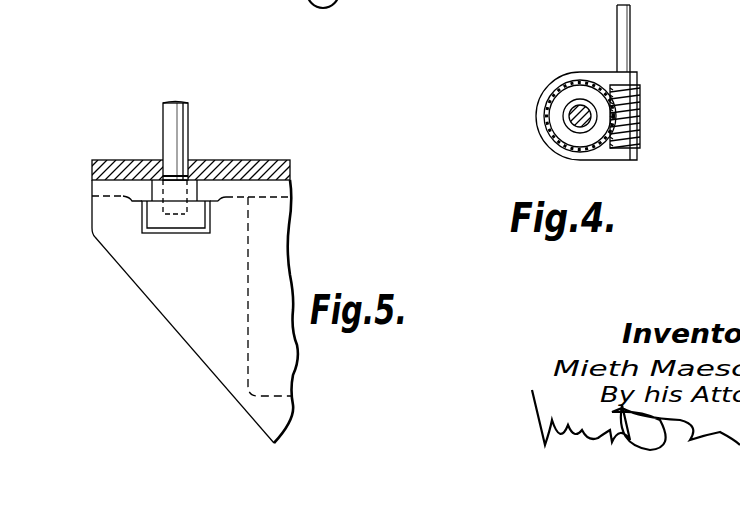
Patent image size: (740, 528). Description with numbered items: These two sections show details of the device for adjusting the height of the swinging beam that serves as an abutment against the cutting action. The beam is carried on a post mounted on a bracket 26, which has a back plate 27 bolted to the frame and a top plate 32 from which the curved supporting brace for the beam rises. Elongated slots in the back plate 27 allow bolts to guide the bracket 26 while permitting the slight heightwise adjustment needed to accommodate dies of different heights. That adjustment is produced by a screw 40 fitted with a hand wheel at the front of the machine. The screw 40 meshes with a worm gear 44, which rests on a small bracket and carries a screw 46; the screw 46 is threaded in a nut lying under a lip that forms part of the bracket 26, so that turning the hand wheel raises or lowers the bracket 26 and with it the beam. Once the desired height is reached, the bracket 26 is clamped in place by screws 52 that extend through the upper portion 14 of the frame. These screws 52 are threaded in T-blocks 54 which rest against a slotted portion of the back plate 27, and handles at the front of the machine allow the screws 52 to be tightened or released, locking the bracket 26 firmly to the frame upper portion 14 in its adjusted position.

In FIG. 5, the upper portion 14 is at (252, 165).
In FIG. 5, the screws 52 is at (180, 125).
In FIG. 5, the bracket 26 is at (90, 222).
In FIG. 5, the top plate 32 is at (188, 350).
In FIG. 5, the T-blocks 54 is at (153, 215).
In FIG. 5, the back plate 27 is at (270, 202).
In FIG. 4, the worm gear 44 is at (555, 115).
In FIG. 4, the screw 46 is at (573, 119).
In FIG. 4, the screw 40 is at (641, 106).